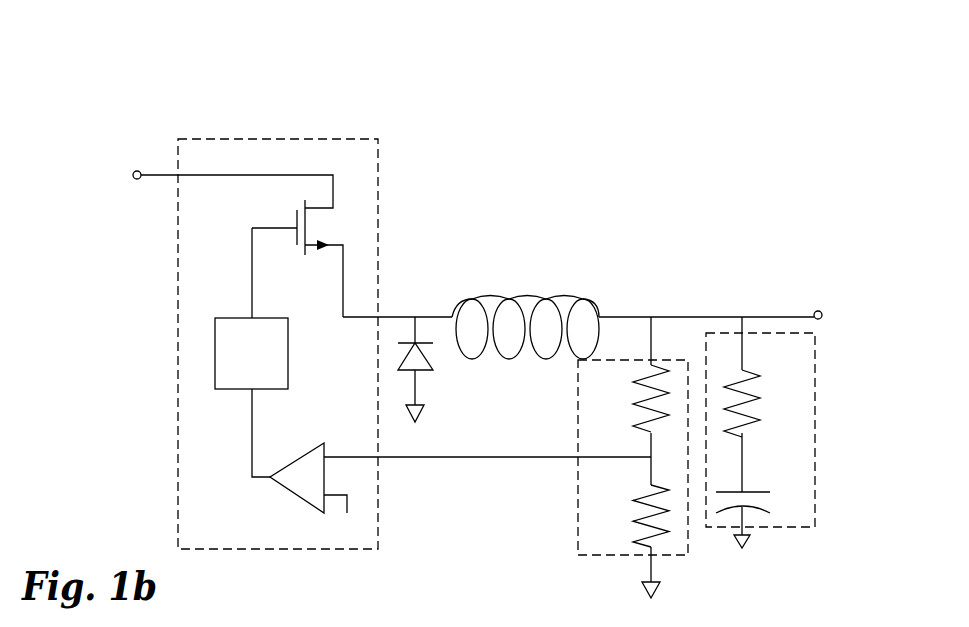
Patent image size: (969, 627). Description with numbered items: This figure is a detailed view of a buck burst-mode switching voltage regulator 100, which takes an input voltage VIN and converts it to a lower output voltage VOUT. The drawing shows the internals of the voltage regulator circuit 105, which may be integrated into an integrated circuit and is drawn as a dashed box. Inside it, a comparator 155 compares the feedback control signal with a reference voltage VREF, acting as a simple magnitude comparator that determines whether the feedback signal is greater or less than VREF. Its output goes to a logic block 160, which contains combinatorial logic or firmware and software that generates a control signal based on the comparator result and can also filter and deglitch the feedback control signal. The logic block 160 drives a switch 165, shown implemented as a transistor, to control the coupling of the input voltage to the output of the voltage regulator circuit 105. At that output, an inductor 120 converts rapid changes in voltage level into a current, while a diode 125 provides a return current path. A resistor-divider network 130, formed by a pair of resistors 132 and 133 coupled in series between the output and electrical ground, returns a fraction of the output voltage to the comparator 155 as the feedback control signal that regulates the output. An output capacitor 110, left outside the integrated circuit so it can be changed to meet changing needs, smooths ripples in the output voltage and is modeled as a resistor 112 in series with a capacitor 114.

The buck burst-mode switching voltage regulator 100 is at (119, 80).
The voltage regulator circuit 105 is at (276, 139).
The output capacitor 110 is at (815, 440).
The resistor 112 is at (770, 395).
The capacitor 114 is at (770, 497).
The inductor 120 is at (503, 300).
The diode 125 is at (433, 370).
The resistor-divider network 130 is at (578, 515).
The resistor 132 is at (636, 385).
The resistor 133 is at (634, 520).
The comparator 155 is at (298, 460).
The logic block 160 is at (290, 352).
The switch 165 is at (330, 227).